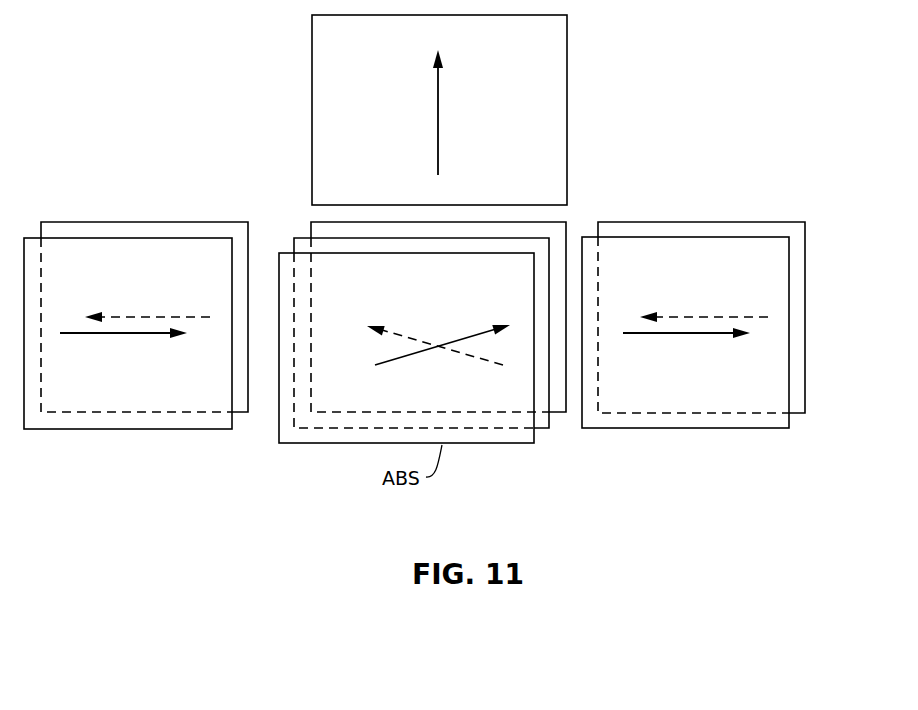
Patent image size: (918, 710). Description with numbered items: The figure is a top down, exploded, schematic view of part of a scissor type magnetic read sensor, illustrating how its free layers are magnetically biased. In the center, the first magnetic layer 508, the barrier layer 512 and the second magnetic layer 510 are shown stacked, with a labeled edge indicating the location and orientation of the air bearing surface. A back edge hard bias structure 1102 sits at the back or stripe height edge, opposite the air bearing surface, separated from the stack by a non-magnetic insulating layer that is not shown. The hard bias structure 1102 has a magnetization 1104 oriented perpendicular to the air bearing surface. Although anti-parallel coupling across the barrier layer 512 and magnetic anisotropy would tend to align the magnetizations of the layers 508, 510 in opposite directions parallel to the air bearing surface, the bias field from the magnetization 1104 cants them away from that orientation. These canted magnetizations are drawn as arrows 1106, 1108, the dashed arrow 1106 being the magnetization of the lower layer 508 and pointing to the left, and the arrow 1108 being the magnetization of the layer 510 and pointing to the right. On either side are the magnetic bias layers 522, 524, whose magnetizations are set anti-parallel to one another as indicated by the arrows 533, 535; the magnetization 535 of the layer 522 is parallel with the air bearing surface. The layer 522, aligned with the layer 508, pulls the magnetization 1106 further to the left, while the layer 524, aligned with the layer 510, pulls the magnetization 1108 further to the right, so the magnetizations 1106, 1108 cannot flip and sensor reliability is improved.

The back edge hard bias structure 1102 is at (567, 82).
The magnetization of the hard bias structure 1104 is at (440, 118).
The magnetization of the first magnetic layer 1106 is at (470, 357).
The magnetization of the second magnetic layer 1108 is at (477, 333).
The first magnetic layer 508 is at (566, 413).
The second magnetic layer 510 is at (497, 445).
The barrier layer 512 is at (549, 430).
The magnetic layer 522 is at (172, 222).
The magnetic layer 524 is at (100, 238).
The magnetization arrow 533 is at (125, 334).
The magnetization of the magnetic layer 522 535 is at (133, 316).